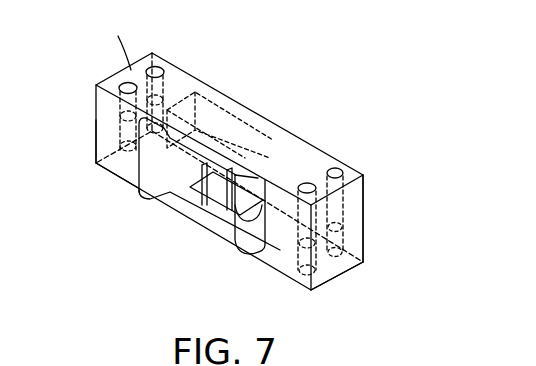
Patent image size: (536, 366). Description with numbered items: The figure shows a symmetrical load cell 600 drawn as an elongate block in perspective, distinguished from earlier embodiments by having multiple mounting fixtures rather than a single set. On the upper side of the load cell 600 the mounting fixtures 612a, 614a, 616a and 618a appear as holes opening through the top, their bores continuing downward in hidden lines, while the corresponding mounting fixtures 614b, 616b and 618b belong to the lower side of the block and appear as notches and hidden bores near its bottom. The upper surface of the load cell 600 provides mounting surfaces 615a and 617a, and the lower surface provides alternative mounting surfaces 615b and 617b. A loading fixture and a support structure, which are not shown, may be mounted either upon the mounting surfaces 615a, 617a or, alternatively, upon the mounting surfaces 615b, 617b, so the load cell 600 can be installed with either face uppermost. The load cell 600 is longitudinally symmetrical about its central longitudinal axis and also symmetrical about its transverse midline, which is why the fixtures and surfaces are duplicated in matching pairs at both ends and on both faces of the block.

The load cell 600 is at (240, 70).
The mounting fixture 612a is at (336, 170).
The mounting fixture 614a is at (307, 185).
The mounting fixture 614b is at (300, 290).
The mounting surface 615a is at (365, 218).
The alternative mounting surface 615b is at (337, 287).
The mounting fixture 616a is at (157, 67).
The mounting fixture 616b is at (198, 184).
The mounting surface 617a is at (119, 44).
The alternative mounting surface 617b is at (103, 163).
The mounting fixture 618a is at (120, 85).
The mounting fixture 618b is at (110, 185).